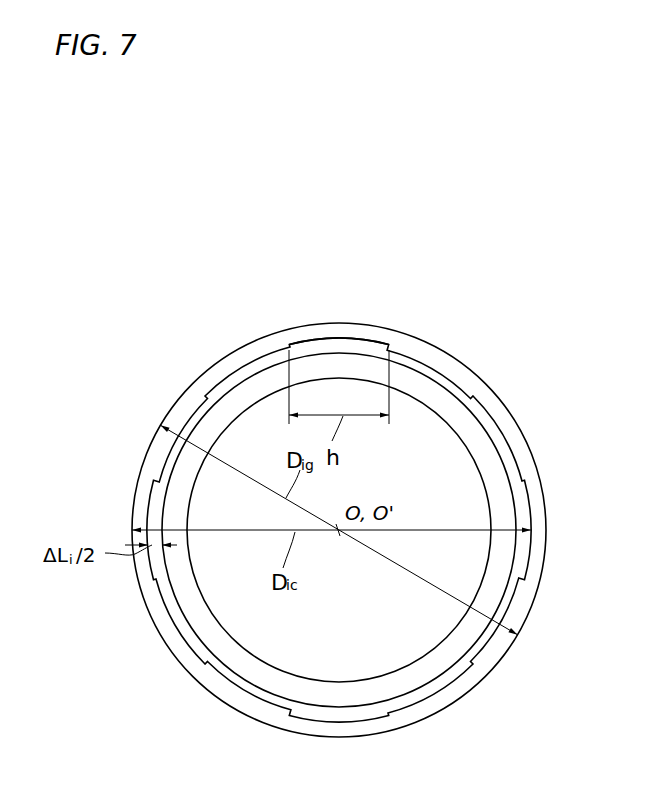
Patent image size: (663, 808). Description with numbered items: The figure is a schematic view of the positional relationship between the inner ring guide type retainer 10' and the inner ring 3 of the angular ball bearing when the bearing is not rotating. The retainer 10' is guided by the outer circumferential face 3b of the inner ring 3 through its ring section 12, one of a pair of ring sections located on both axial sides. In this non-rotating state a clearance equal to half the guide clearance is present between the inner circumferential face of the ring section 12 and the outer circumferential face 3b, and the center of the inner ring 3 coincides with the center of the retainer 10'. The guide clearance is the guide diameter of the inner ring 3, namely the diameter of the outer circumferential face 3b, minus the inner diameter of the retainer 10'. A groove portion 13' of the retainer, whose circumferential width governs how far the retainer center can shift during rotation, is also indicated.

The retainer 10' is at (350, 530).
The ring section 12 is at (407, 343).
The protrusion of retaining ring 13' is at (338, 305).
The outer circumferential face 3b is at (428, 377).
The inner ring 3 is at (338, 696).